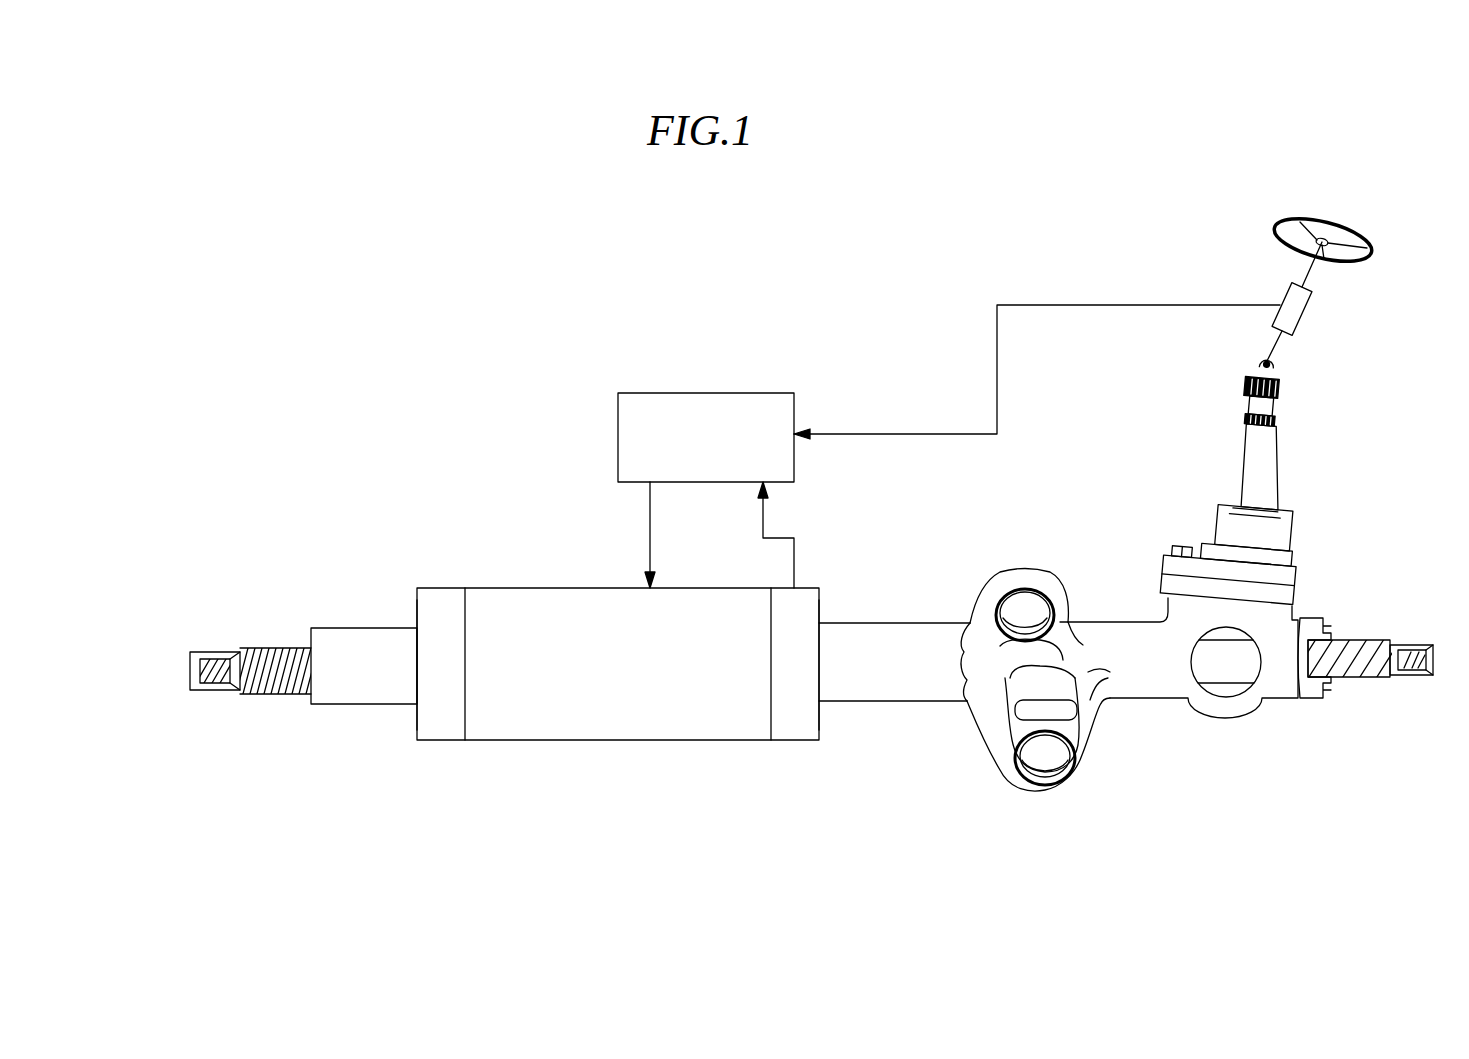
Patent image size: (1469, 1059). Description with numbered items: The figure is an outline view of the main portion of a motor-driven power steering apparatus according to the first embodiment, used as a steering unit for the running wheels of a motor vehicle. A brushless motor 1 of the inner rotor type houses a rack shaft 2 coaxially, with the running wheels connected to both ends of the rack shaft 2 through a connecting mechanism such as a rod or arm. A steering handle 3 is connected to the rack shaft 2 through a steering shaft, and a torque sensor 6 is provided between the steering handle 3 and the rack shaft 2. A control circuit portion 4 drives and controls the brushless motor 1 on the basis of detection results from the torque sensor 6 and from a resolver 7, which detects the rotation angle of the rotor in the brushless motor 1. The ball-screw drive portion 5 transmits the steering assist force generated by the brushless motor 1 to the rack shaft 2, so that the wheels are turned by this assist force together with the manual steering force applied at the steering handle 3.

The brushless motor 1 is at (503, 603).
The rack shaft 2 is at (272, 647).
The steering handle 3 is at (1305, 216).
The control circuit portion 4 is at (678, 402).
The ball-screw drive portion 5 is at (445, 713).
The torque sensor 6 is at (1290, 297).
The resolver 7 is at (797, 705).